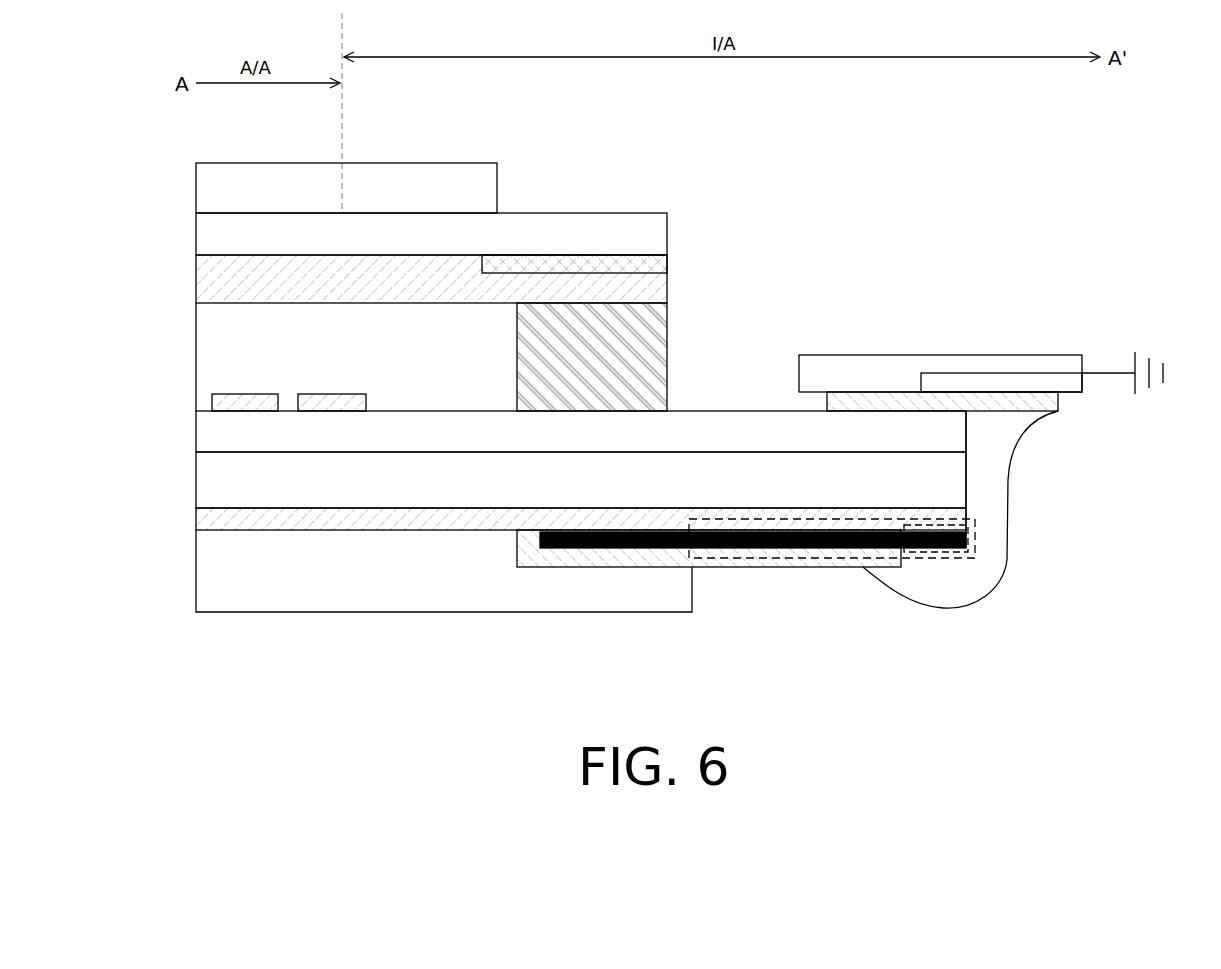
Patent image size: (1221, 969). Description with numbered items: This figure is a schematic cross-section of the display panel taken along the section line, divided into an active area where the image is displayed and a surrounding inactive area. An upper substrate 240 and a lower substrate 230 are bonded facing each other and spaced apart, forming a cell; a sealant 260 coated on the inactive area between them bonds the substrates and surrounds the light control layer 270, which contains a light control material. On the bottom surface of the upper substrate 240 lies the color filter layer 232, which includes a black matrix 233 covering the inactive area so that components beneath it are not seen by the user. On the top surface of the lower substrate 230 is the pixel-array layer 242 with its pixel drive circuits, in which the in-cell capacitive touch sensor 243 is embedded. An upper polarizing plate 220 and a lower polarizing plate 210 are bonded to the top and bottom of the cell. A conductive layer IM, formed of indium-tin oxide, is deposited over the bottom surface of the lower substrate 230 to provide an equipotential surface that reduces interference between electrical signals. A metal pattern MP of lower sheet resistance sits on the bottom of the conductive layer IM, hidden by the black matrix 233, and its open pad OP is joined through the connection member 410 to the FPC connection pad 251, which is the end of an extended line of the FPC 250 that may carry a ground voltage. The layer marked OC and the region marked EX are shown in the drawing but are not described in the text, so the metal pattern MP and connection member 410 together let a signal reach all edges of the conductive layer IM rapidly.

The upper polarizing plate 220 is at (221, 186).
The upper substrate 240 is at (221, 235).
The color filter layer 232 is at (221, 278).
The black matrix 233 is at (622, 265).
The light control layer 270 is at (221, 360).
The sealant 260 is at (650, 352).
The in-cell capacitive touch sensor 243 is at (221, 401).
The pixel-array layer 242 is at (205, 435).
The lower substrate 230 is at (221, 483).
The conductive layer IM is at (221, 519).
The lower polarizing plate 210 is at (221, 564).
The overcoat layer OC is at (660, 567).
The metal pattern MP is at (738, 548).
The extension portion EX is at (832, 560).
The open pad OP is at (935, 555).
The FPC 250 is at (1069, 362).
The FPC connection pad 251 is at (1040, 400).
The connection member 410 is at (980, 553).